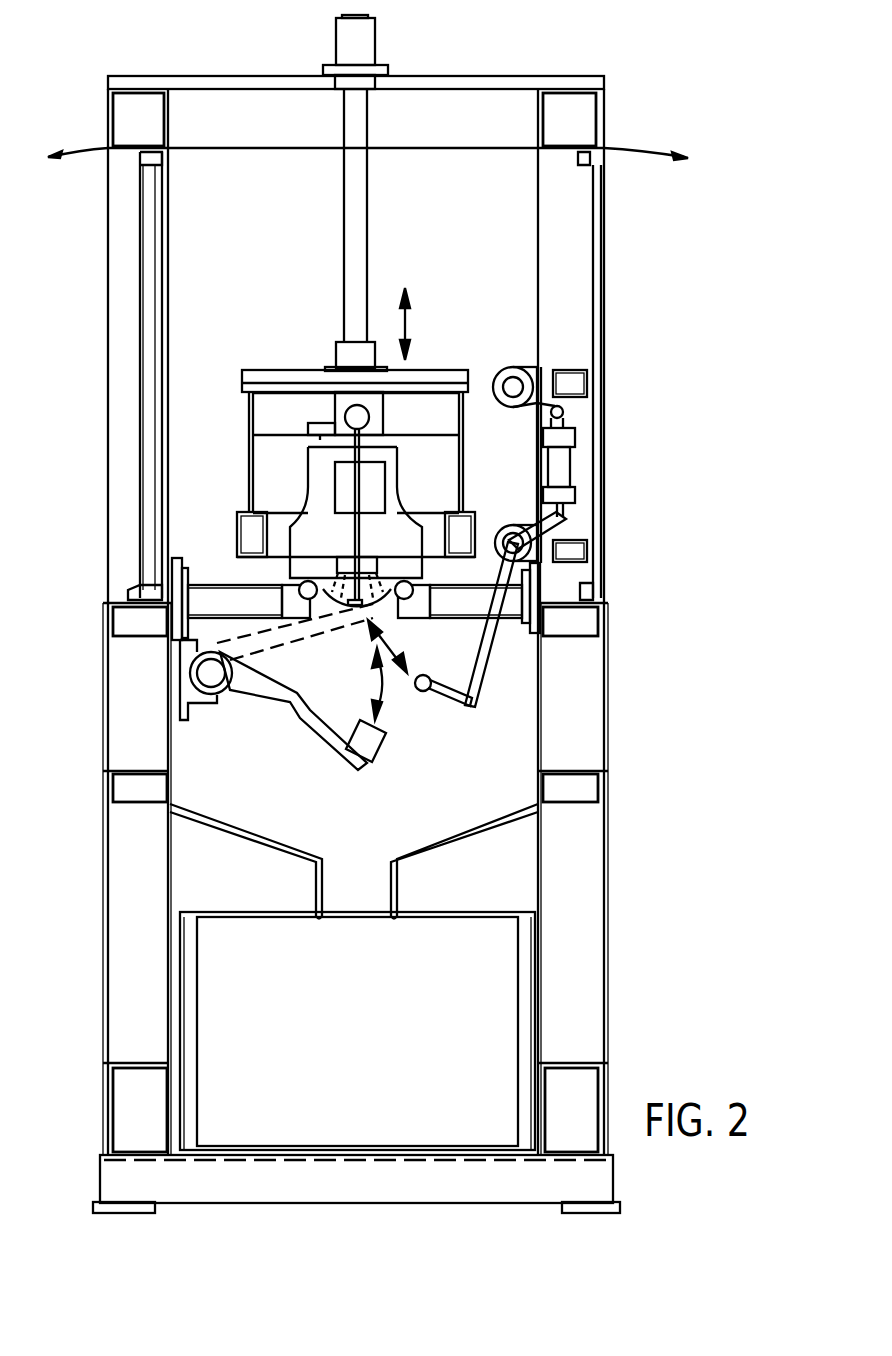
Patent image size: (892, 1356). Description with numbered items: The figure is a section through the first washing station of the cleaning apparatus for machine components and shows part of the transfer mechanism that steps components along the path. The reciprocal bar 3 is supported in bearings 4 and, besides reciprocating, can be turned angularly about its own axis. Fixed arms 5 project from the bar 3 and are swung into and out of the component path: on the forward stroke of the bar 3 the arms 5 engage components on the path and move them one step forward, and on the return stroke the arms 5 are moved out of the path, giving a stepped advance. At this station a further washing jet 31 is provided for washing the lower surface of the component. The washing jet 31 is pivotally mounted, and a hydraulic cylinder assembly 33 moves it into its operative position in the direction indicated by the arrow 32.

The reciprocal bar 3 is at (211, 680).
The bearings 4 is at (190, 694).
The fixed arms 5 is at (310, 722).
The washing jet 31 is at (427, 692).
The arrow 32 is at (388, 652).
The hydraulic cylinder assembly 33 is at (565, 472).